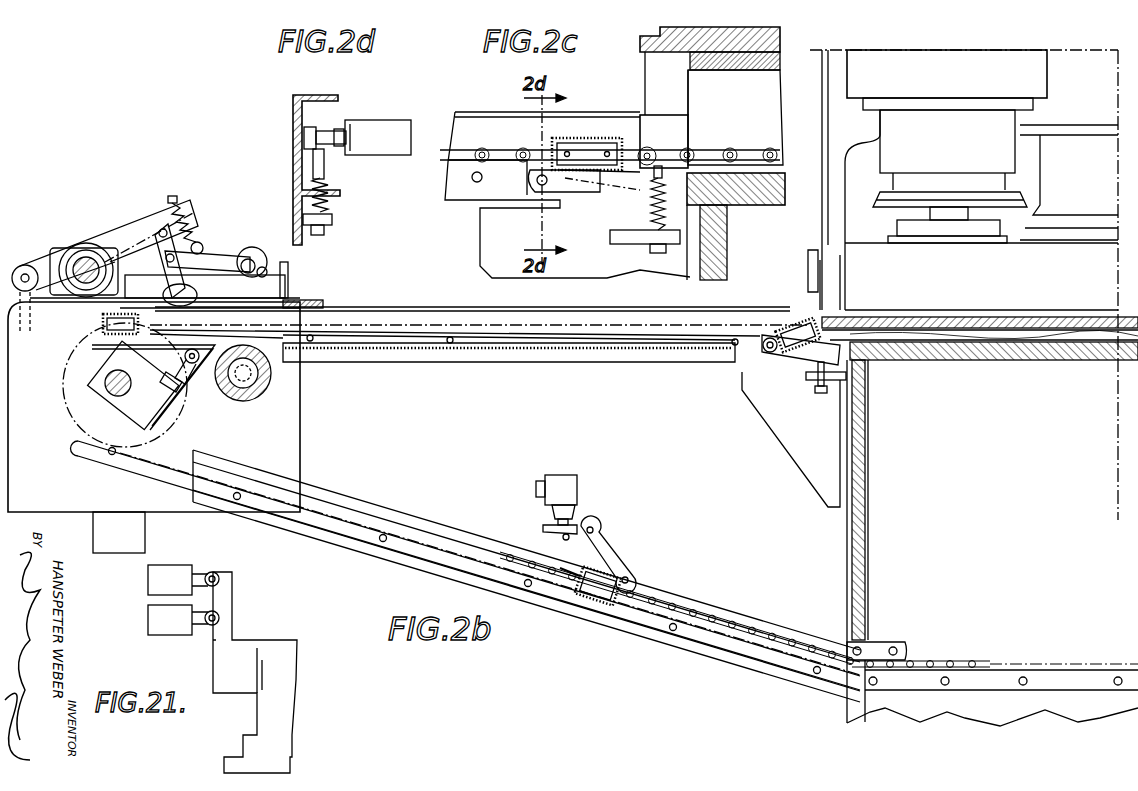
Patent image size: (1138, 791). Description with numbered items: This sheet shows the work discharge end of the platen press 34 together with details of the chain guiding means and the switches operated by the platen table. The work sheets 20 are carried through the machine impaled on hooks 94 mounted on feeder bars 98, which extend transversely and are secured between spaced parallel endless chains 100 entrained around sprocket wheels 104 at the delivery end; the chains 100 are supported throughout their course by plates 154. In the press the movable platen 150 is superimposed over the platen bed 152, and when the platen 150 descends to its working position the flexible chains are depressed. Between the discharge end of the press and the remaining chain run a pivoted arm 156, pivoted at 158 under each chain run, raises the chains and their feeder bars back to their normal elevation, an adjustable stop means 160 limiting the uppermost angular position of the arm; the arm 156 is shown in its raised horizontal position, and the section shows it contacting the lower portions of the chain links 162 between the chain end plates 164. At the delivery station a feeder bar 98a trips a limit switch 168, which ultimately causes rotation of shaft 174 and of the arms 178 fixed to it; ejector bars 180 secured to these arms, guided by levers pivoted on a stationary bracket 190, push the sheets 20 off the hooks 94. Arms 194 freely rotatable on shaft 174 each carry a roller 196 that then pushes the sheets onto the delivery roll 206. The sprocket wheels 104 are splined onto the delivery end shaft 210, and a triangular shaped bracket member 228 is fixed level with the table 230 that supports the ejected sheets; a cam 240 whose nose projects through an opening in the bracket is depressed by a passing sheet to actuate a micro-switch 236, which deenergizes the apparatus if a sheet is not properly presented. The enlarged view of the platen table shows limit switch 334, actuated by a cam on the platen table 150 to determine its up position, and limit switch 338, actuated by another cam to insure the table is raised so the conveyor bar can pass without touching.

In FIG. 2B, the sheets 20 is at (930, 334).
In FIG. 2B, the platen press 34 is at (1020, 42).
In FIG. 2B, the hooks 94 is at (560, 570).
In FIG. 2B, the feeder bars 98 is at (103, 320).
In FIG. 2B, the feeder bar 98a is at (600, 600).
In FIG. 2C, the endless chains 100 is at (465, 144).
In FIG. 2B, the endless chains 100 is at (362, 326).
In FIG. 2B, the sprocket wheels 104 is at (75, 420).
In FIG. 2C, the movable platen 150 is at (730, 48).
In FIG. 2B, the movable platen 150 is at (1047, 244).
In FIG. 21, the movable platen 150 is at (290, 693).
In FIG. 2C, the platen bed 152 is at (752, 200).
In FIG. 2B, the platen bed 152 is at (1034, 352).
In FIG. 2C, the plates 154 is at (450, 172).
In FIG. 2B, the plates 154 is at (350, 340).
In FIG. 2D, the pivoted arm 156 is at (322, 172).
In FIG. 2C, the pivoted arm 156 is at (580, 180).
In FIG. 2B, the pivoted arm 156 is at (786, 352).
In FIG. 2C, the pivot 158 is at (540, 184).
In FIG. 2C, the adjustable stop means 160 is at (656, 214).
In FIG. 2D, the chain links 162 is at (297, 148).
In FIG. 2D, the chain end plates 164 is at (308, 134).
In FIG. 2B, the limit switch 168 is at (566, 480).
In FIG. 2B, the shaft 174 is at (80, 260).
In FIG. 2B, the arms 178 is at (135, 222).
In FIG. 2B, the ejector bars 180 is at (198, 292).
In FIG. 2B, the stationary bracket 190 is at (282, 270).
In FIG. 2B, the arms 194 is at (205, 246).
In FIG. 2B, the roller 196 is at (252, 248).
In FIG. 2B, the delivery roll 206 is at (250, 393).
In FIG. 2B, the delivery end shaft 210 is at (110, 384).
In FIG. 2B, the triangular shaped bracket member 228 is at (92, 346).
In FIG. 2B, the table 230 is at (532, 350).
In FIG. 2B, the micro-switch 236 is at (172, 392).
In FIG. 2B, the cam 240 is at (192, 372).
In FIG. 21, the limit switch 334 is at (158, 612).
In FIG. 21, the limit switch 338 is at (178, 574).